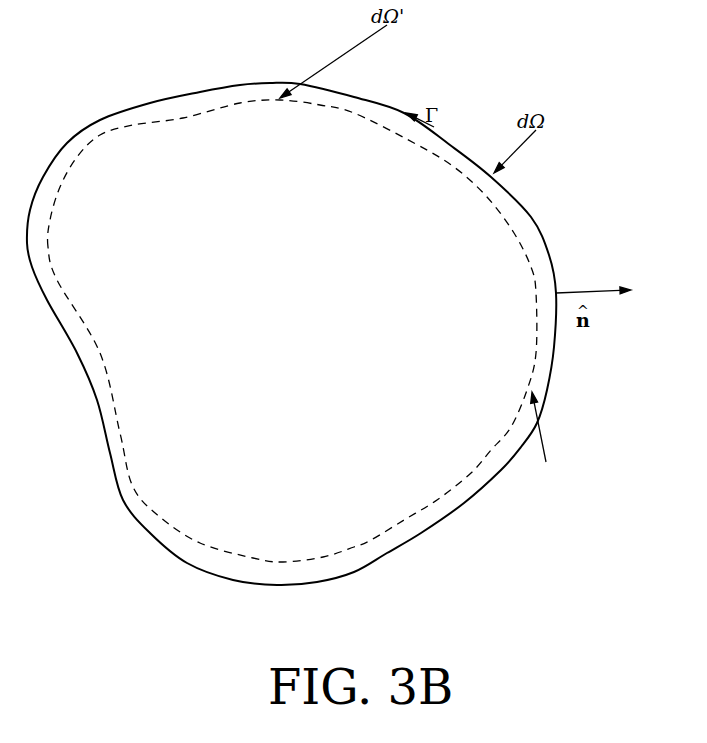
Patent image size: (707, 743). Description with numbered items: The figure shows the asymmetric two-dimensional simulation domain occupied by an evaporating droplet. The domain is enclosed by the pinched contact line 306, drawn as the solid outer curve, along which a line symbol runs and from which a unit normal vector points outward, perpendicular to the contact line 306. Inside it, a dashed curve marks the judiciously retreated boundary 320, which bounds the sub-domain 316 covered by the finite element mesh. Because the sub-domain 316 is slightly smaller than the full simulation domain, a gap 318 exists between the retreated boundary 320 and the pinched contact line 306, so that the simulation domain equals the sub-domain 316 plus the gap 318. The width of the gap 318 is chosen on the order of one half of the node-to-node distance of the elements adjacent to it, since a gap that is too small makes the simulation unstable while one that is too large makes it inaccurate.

The pinched contact line 306 is at (541, 212).
The judiciously retreated boundary 320 is at (180, 101).
The sub-domain 316 is at (457, 296).
The gap 318 is at (503, 454).